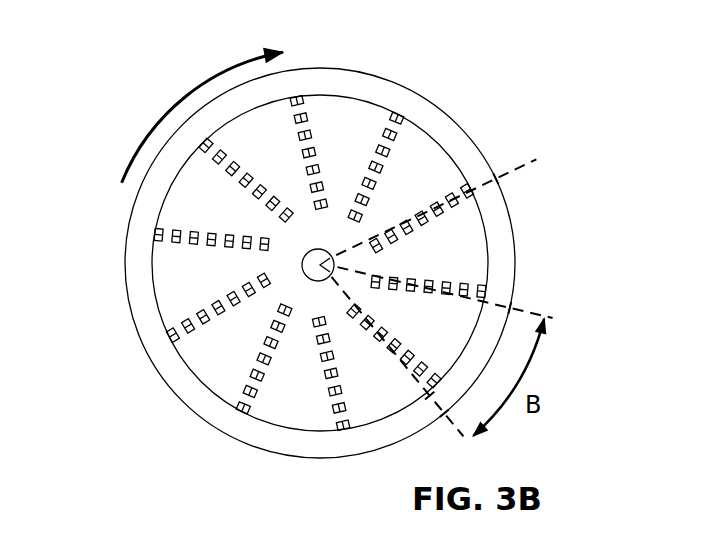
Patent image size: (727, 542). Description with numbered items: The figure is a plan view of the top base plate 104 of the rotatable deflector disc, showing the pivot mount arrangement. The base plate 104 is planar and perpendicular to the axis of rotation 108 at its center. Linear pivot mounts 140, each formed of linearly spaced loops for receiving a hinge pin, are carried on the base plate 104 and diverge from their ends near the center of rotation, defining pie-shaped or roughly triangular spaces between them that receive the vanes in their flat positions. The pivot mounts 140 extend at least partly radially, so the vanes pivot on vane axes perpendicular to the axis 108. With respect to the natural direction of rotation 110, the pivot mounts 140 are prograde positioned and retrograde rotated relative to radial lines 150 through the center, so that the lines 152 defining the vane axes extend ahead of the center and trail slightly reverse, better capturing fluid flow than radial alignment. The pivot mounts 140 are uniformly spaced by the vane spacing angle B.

The base plate 104 is at (283, 143).
The axis of rotation 108 is at (303, 264).
The natural direction of rotation 110 is at (163, 117).
The linear pivot mount 140 is at (403, 107).
The radial line 150 is at (524, 176).
The line defining vane axis 152 is at (504, 170).